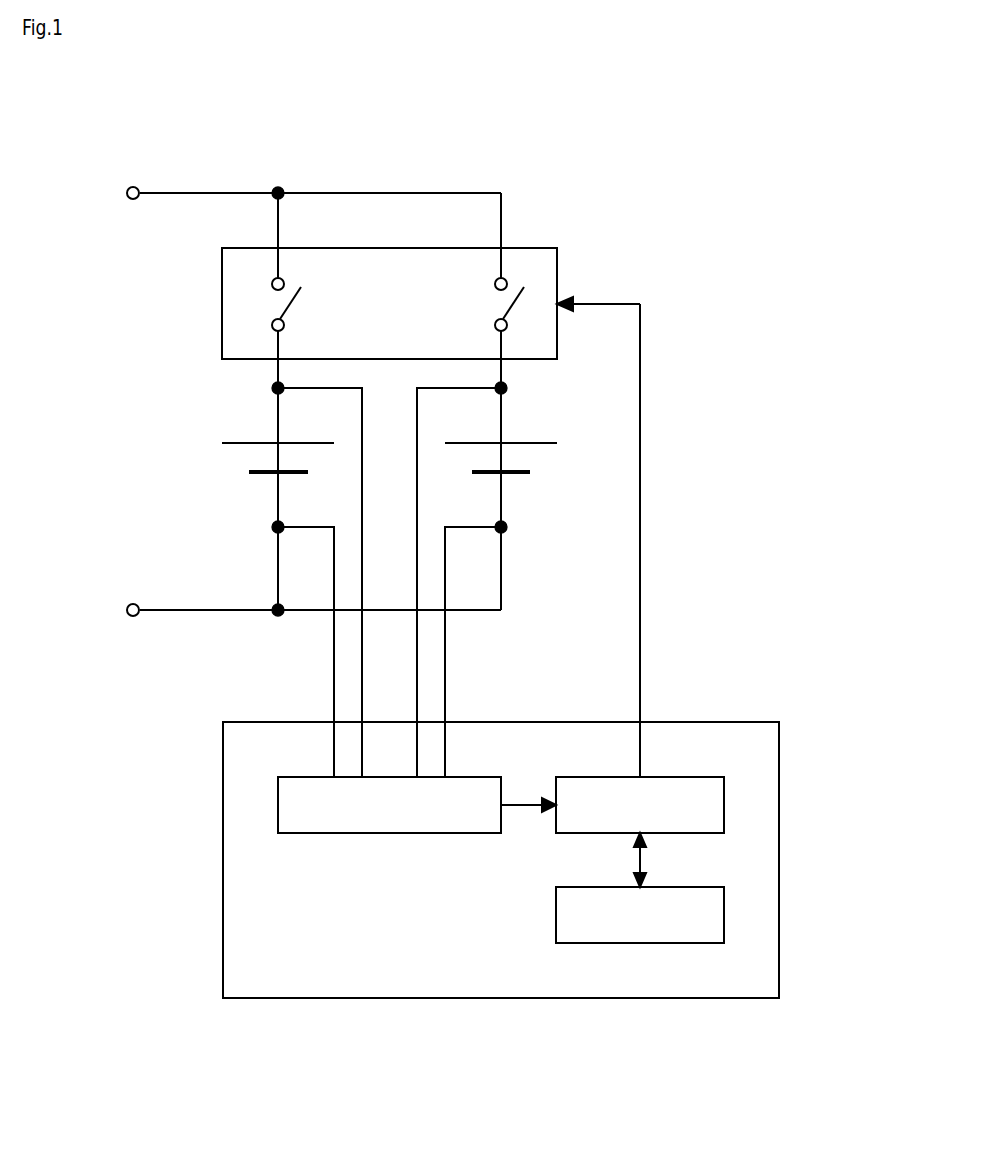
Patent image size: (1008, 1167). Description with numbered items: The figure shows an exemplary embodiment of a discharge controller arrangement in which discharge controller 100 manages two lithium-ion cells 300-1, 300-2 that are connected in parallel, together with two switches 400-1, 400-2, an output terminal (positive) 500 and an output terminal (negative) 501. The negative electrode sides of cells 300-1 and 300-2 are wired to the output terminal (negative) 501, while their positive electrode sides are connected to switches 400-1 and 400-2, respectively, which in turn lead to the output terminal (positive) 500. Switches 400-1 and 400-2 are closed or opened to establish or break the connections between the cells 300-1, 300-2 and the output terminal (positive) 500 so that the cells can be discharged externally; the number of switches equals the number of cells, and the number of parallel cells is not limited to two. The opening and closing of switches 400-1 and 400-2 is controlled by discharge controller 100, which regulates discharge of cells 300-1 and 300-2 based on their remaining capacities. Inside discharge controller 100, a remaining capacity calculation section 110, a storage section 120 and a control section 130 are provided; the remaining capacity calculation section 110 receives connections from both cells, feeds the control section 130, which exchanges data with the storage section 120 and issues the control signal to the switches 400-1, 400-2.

The output terminal (positive) 500 is at (152, 160).
The output terminal (negative) 501 is at (131, 617).
The switch 400-1 is at (290, 291).
The switch 400-2 is at (513, 291).
The cell 300-1 is at (252, 442).
The cell 300-2 is at (563, 418).
The discharge controller 100 is at (730, 707).
The remaining capacity calculation section 110 is at (468, 777).
The control section 130 is at (692, 777).
The storage section 120 is at (692, 887).